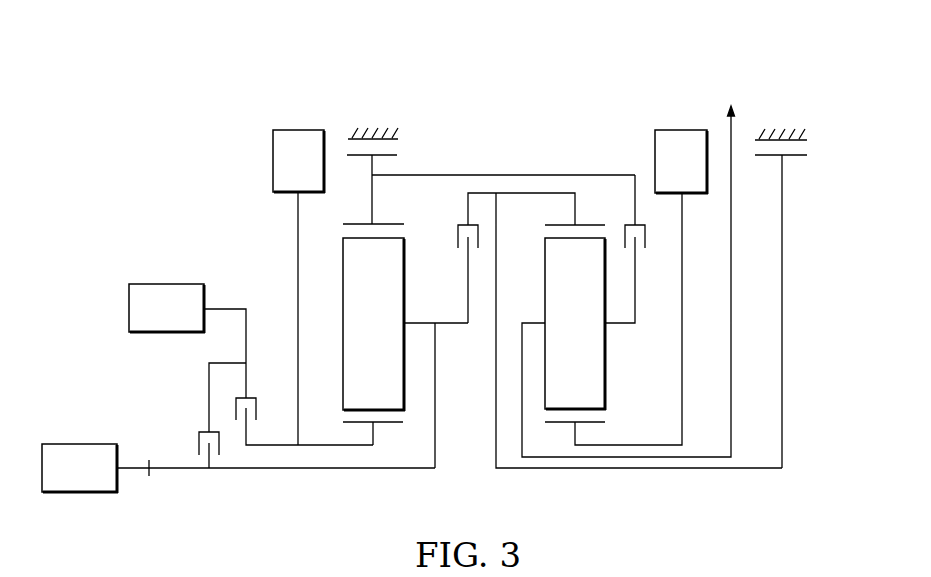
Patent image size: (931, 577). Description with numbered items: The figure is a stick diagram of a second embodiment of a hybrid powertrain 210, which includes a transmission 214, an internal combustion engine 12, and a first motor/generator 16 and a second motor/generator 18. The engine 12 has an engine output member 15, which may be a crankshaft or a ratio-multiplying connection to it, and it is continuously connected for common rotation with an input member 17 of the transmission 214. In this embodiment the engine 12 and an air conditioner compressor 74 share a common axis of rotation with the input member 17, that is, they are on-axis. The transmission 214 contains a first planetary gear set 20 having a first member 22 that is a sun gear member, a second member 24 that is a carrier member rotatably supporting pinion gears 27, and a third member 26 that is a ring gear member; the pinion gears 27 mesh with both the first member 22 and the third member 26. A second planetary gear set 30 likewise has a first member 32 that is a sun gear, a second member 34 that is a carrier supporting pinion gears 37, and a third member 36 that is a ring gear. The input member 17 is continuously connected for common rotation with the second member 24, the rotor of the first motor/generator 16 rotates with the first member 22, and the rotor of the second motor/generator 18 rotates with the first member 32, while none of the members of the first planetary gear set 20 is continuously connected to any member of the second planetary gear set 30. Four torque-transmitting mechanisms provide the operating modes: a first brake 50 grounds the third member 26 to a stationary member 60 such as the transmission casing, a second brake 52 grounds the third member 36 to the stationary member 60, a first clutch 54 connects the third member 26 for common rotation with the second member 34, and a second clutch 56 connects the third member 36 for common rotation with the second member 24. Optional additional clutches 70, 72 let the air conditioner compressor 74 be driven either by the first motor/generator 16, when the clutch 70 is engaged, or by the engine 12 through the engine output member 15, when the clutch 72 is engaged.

The internal combustion engine 12 is at (80, 468).
The engine output member 15 is at (135, 470).
The first motor/generator 16 is at (299, 287).
The input member 17 is at (175, 466).
The second motor/generator 18 is at (681, 162).
The first planetary gear set 20 is at (322, 356).
The first member 22 is at (387, 424).
The second member 24 is at (417, 321).
The third member 26 is at (383, 222).
The pinion gears 27 is at (374, 324).
The second planetary gear set 30 is at (633, 385).
The first member 32 is at (587, 424).
The second member 34 is at (617, 326).
The third member 36 is at (578, 222).
The pinion gears 37 is at (575, 324).
The first brake 50 is at (412, 146).
The second brake 52 is at (824, 158).
The first clutch 54 is at (642, 252).
The second clutch 56 is at (470, 252).
The stationary member 60 is at (375, 130).
The first additional clutch 70 is at (253, 428).
The second additional clutch 72 is at (202, 462).
The air conditioner compressor 74 is at (187, 358).
The powertrain 210 is at (636, 44).
The transmission 214 is at (516, 116).